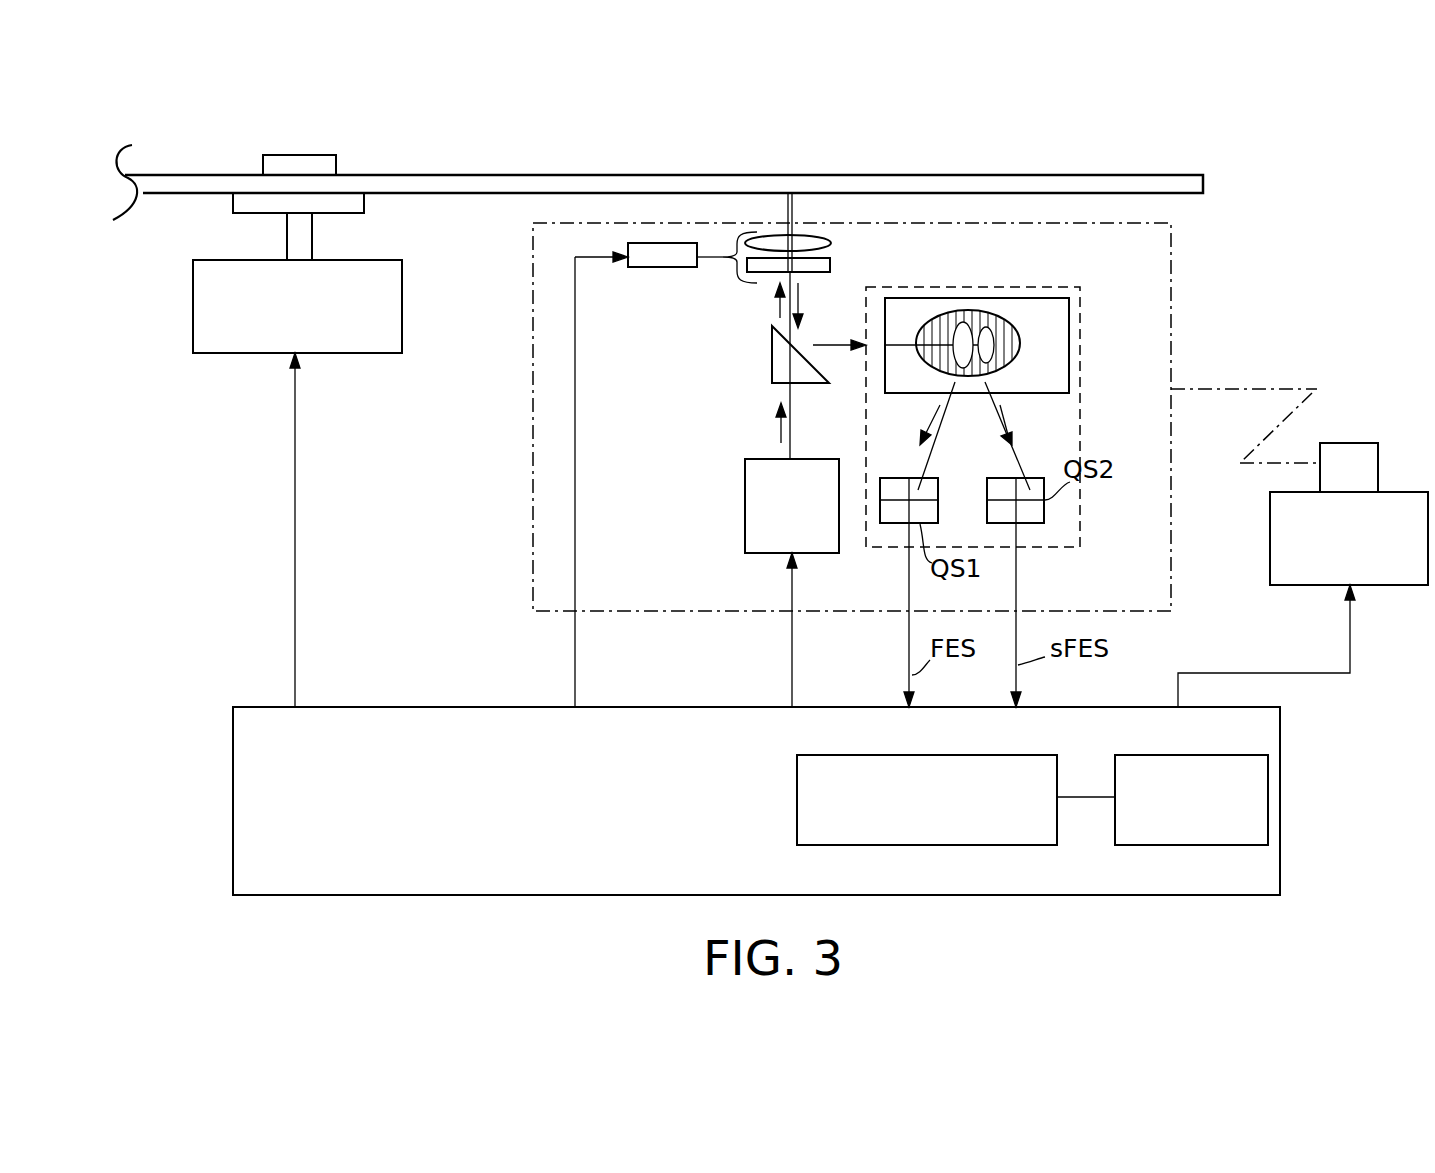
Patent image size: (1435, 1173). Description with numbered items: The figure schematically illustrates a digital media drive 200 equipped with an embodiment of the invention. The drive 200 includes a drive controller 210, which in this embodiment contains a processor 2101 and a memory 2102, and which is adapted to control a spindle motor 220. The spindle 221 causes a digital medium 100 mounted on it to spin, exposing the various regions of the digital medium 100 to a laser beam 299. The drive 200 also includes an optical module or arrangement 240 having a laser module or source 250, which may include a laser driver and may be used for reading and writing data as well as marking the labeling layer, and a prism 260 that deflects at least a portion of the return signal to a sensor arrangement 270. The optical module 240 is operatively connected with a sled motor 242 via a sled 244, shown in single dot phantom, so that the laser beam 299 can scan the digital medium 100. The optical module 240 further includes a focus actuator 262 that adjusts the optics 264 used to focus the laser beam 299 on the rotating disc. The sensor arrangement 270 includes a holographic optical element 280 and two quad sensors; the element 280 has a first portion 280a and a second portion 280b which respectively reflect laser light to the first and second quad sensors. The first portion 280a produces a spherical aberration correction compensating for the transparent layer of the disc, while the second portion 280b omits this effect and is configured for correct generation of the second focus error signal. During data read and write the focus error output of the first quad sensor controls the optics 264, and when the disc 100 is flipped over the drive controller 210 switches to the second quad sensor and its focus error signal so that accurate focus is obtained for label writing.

The digital medium 100 is at (683, 173).
The drive 200 is at (1212, 136).
The drive controller 210 is at (455, 723).
The spindle motor 220 is at (312, 343).
The spindle 221 is at (287, 220).
The optical module 240 is at (1172, 360).
The sled motor 242 is at (1390, 568).
The sled 244 is at (1275, 386).
The laser module 250 is at (745, 488).
The prism 260 is at (772, 365).
The focus actuator 262 is at (683, 268).
The optics 264 is at (733, 301).
The sensor arrangement 270 is at (1010, 283).
The HOE (Holographic Optical Element) 280 is at (950, 312).
The first HOE portion 280a is at (970, 335).
The second HOE portion 280b is at (990, 340).
The laser beam 299 is at (795, 207).
The processor 2101 is at (928, 845).
The memory 2102 is at (1133, 845).